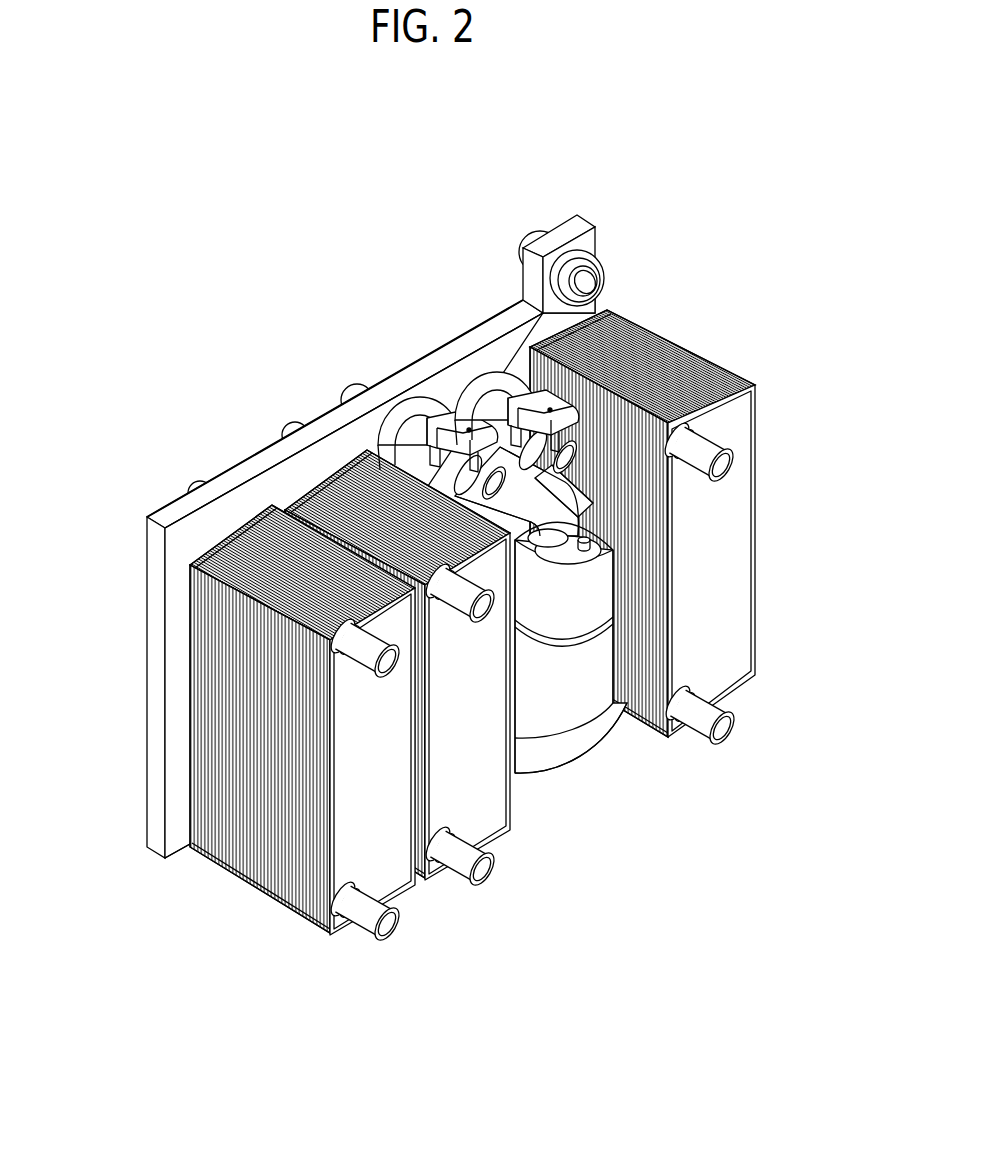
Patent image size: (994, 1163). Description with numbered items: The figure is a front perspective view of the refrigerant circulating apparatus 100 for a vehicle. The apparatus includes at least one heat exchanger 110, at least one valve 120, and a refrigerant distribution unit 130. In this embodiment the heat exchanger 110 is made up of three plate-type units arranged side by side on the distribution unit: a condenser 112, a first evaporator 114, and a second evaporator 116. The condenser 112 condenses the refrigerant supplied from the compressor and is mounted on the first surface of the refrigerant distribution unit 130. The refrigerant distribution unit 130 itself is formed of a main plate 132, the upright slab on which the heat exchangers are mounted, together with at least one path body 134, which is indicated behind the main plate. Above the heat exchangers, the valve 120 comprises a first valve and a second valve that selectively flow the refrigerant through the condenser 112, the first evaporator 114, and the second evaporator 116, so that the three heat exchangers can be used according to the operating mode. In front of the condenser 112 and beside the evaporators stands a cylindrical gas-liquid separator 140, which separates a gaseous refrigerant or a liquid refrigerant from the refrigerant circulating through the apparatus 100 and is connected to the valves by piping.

The refrigerant circulating apparatus 100 is at (421, 577).
The heat exchanger 110 is at (426, 607).
The condenser 112 is at (757, 556).
The first evaporator 114 is at (467, 808).
The second evaporator 116 is at (377, 873).
The valve 120 is at (524, 491).
The refrigerant distribution unit 130 is at (317, 536).
The main plate 132 is at (160, 692).
The path body 134 is at (340, 392).
The gas-liquid separator 140 is at (557, 716).